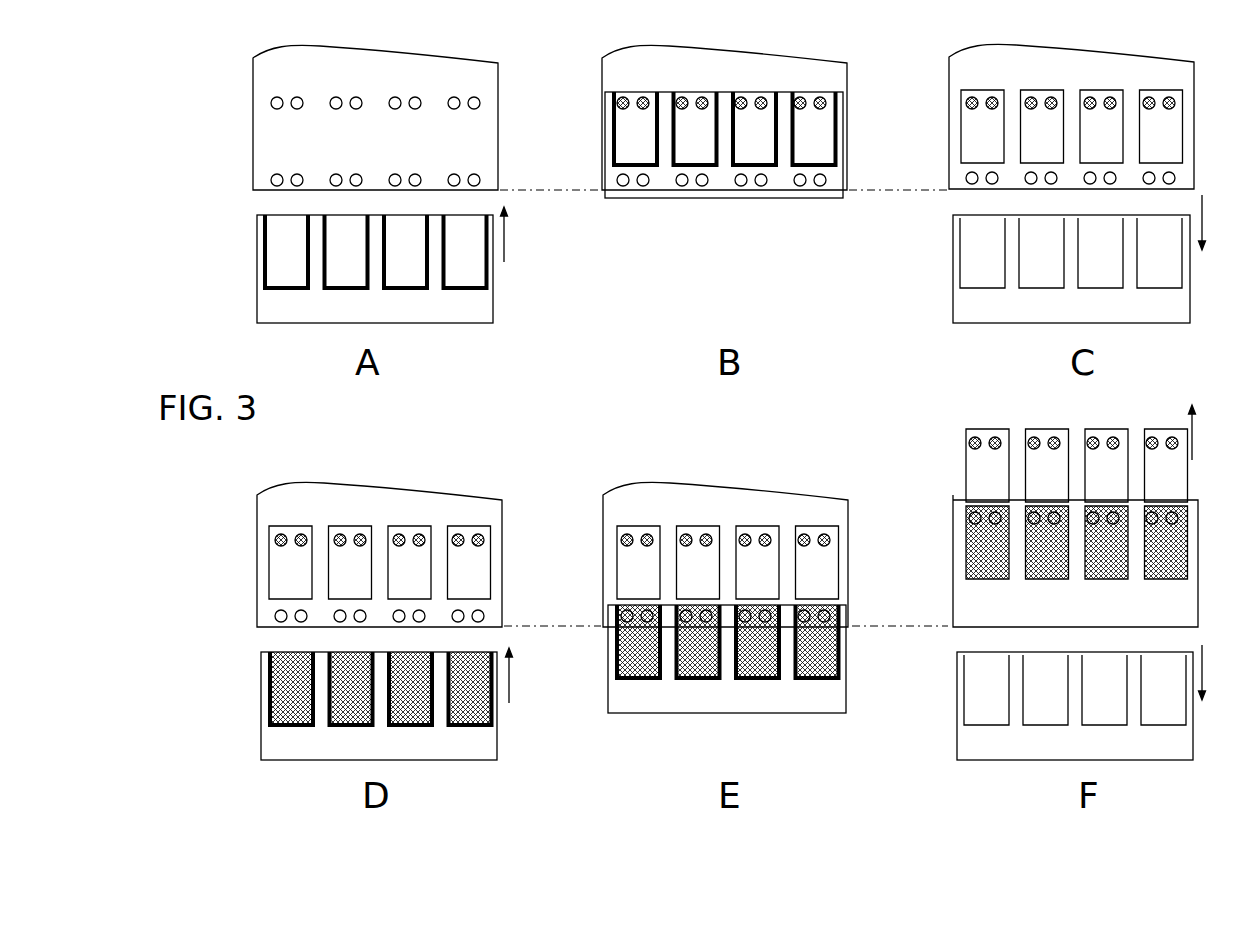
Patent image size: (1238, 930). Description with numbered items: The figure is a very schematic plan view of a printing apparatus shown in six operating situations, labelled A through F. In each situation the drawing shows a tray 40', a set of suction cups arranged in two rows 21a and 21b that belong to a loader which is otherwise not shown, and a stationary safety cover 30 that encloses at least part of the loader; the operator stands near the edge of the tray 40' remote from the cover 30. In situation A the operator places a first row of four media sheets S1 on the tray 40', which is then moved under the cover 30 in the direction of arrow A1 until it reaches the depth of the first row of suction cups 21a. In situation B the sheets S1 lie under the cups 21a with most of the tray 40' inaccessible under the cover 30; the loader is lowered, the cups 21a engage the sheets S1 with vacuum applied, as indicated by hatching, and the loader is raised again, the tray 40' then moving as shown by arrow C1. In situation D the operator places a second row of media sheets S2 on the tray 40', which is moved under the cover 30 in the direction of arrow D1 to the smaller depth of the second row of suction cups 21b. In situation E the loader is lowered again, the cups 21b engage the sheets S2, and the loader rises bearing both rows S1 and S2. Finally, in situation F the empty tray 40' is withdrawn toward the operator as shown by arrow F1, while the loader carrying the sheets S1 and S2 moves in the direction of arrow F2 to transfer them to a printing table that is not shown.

The stationary safety cover 30 is at (250, 173).
The first row of suction cups 21a is at (348, 90).
The second row of suction cups 21b is at (388, 167).
The tray 40' is at (691, 426).
The first row of media sheets S1 is at (345, 240).
The second row of media sheets S2 is at (335, 705).
The arrow A1 is at (520, 235).
The arrow C1 is at (1218, 222).
The arrow D1 is at (526, 676).
The arrow F1 is at (1216, 672).
The arrow F2 is at (1206, 434).